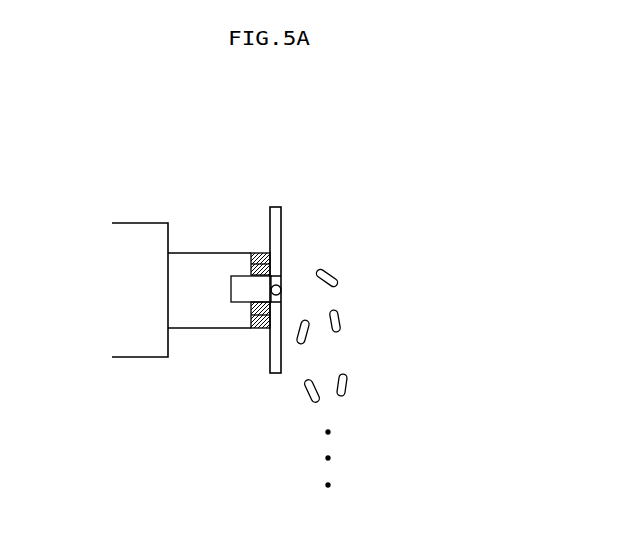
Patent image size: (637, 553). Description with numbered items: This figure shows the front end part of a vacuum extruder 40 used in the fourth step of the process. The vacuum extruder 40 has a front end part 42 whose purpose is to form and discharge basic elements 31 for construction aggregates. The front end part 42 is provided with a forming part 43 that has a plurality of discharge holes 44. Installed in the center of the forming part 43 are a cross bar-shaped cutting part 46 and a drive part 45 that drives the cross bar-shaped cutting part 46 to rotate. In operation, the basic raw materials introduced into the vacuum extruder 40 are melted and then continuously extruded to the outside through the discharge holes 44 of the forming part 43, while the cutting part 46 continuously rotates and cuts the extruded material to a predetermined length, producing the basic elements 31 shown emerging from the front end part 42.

The basic elements for construction aggregates 31 is at (340, 323).
The vacuum extruder 40 is at (135, 226).
The front end part 42 is at (215, 254).
The forming part 43 is at (262, 330).
The discharge hole 44 is at (257, 251).
The drive part 45 is at (236, 303).
The cross bar-shaped cutting part 46 is at (277, 207).